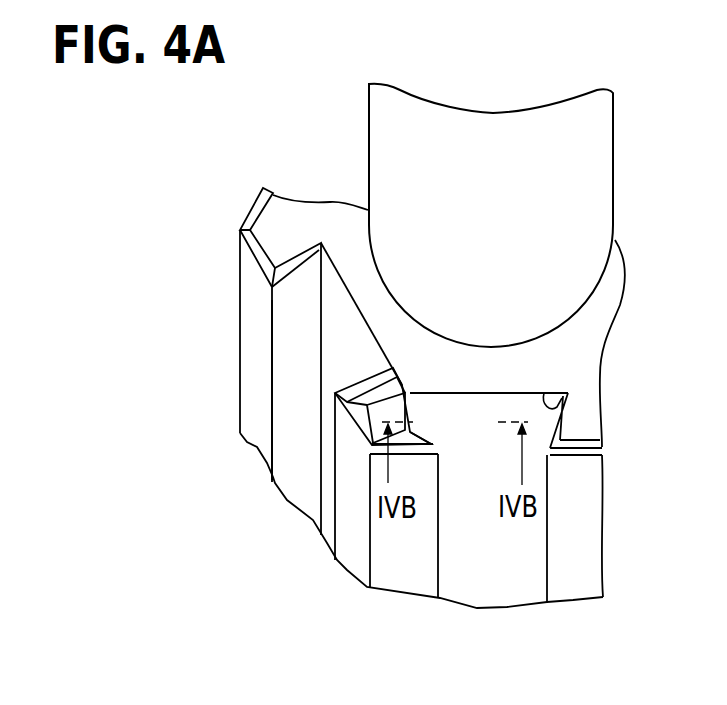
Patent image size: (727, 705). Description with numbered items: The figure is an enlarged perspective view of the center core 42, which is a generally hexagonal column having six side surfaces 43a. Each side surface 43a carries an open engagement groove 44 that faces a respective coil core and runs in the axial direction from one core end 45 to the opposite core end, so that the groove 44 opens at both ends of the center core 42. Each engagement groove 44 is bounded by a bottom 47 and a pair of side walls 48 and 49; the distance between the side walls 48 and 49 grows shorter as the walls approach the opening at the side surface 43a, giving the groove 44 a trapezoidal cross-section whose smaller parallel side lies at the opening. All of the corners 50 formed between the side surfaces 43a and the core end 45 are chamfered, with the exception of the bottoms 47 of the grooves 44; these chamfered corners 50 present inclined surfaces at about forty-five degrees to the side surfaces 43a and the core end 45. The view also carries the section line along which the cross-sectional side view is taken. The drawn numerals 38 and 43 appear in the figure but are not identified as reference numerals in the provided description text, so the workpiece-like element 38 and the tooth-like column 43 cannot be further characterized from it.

The workpiece 38 is at (598, 162).
The center core 42 is at (244, 204).
The tooth column 43 is at (352, 553).
The side surface 43a is at (597, 537).
The engagement groove 44 is at (312, 460).
The core end 45 is at (597, 352).
The bottom 47 is at (340, 313).
The side wall 48 is at (285, 303).
The side wall 49 is at (370, 378).
The chamfered corner 50 is at (358, 436).